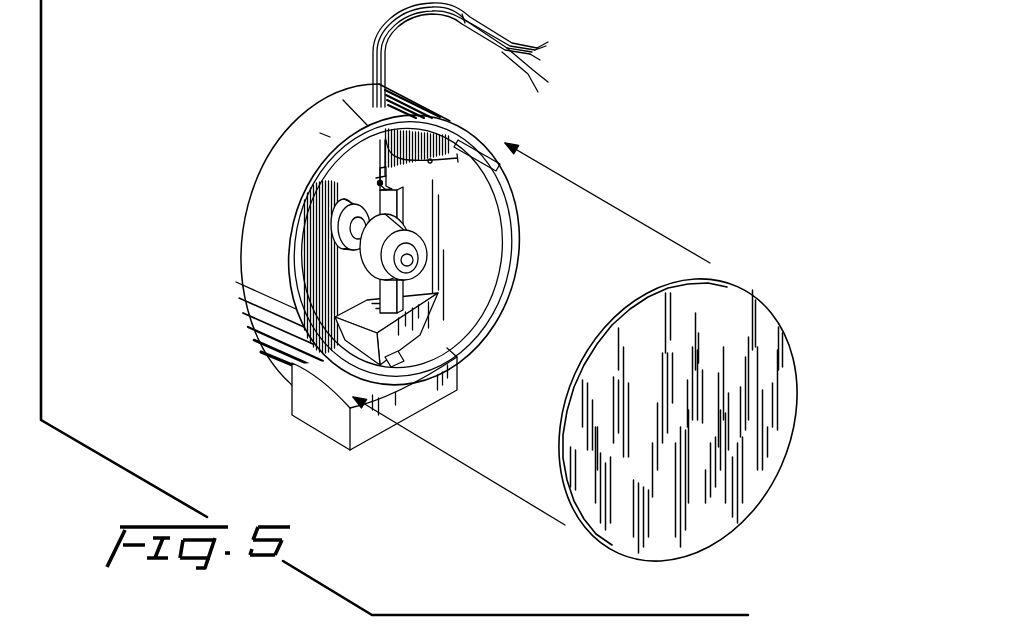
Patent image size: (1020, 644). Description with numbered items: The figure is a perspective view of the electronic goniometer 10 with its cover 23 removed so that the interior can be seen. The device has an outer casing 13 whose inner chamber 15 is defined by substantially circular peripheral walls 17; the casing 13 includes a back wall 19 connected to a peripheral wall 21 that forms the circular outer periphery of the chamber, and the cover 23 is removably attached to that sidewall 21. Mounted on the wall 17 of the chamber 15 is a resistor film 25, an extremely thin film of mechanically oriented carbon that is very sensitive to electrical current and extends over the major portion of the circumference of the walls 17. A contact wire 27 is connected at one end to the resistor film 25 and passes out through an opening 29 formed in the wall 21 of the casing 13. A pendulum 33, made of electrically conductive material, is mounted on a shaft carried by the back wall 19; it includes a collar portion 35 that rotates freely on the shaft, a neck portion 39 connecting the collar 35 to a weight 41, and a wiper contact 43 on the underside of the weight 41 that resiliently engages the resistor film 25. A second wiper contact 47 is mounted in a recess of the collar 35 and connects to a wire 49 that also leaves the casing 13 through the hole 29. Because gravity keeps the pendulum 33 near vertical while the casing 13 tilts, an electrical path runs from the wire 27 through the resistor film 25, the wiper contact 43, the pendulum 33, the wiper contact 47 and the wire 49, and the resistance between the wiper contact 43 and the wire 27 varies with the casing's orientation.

The electronic goniometer 10 is at (675, 133).
The outer casing 13 is at (300, 105).
The inner chamber 15 is at (306, 272).
The peripheral walls 17 is at (503, 277).
The back wall 19 is at (320, 225).
The peripheral wall 21 is at (258, 214).
The cover 23 is at (762, 320).
The resistor film 25 is at (498, 220).
The contact wire 27 is at (434, 162).
The opening 29 is at (373, 95).
The pendulum 33 is at (322, 370).
The collar portion 35 is at (370, 252).
The neck portion 39 is at (355, 342).
The weight 41 is at (420, 325).
The wiper contact 43 is at (398, 358).
The wiper contact 47 is at (378, 181).
The wire 49 is at (547, 43).